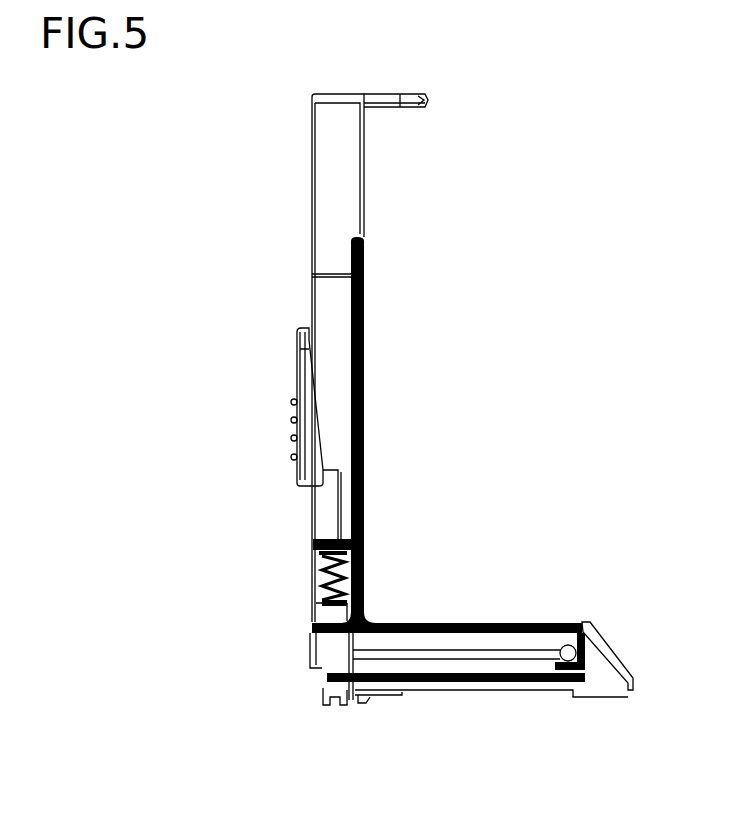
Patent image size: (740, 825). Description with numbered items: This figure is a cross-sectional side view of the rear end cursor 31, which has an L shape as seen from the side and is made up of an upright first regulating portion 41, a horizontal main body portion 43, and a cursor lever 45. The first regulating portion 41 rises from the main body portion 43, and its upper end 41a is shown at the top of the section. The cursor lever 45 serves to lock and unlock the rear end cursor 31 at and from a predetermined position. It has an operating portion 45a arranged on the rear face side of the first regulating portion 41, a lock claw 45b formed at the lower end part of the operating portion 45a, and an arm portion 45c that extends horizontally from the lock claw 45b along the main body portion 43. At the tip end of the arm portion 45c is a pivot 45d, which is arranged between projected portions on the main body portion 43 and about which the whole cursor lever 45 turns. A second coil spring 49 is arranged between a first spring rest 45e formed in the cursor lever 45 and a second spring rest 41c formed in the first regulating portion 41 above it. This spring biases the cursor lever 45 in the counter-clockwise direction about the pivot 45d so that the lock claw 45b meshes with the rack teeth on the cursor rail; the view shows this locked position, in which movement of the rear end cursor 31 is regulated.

The rear end cursor 31 is at (550, 197).
The first regulating portion 41 is at (368, 292).
The upper end portion of cover member 41a is at (430, 100).
The second spring rest 41c is at (334, 538).
The main body portion 43 is at (452, 622).
The cursor lever 45 is at (277, 484).
The operating portion 45a is at (298, 374).
The lock claw 45b is at (333, 705).
The arm portion 45c is at (483, 656).
The pivot 45d is at (565, 645).
The first spring rest 45e is at (330, 602).
The second coil spring 49 is at (318, 567).